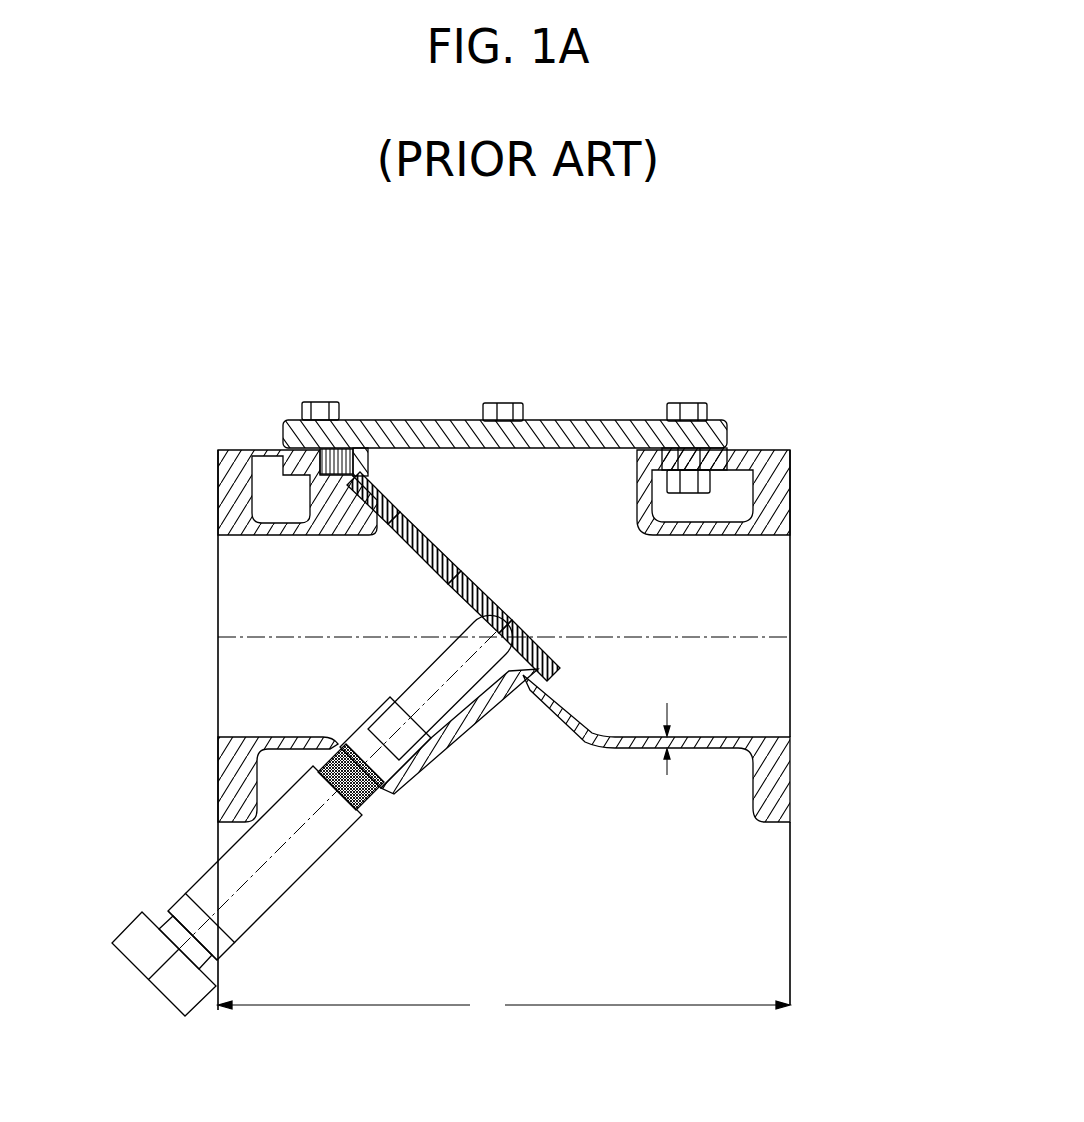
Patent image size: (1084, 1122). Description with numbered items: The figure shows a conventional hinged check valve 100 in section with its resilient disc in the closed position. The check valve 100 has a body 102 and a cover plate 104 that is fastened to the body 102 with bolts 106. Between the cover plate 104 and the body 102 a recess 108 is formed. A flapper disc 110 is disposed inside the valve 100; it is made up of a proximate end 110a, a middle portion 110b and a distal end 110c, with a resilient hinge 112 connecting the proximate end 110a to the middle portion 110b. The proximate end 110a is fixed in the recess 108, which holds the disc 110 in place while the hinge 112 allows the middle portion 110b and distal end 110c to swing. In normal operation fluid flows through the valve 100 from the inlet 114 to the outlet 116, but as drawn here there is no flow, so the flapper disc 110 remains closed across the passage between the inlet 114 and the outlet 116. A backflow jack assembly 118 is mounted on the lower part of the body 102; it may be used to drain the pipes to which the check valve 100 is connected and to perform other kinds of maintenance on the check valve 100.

The hinged check valve 100 is at (243, 348).
The body 102 is at (792, 488).
The cover plate 104 is at (432, 420).
The bolts 106 is at (690, 403).
The recess 108 is at (345, 421).
The flapper disc 110 is at (468, 568).
The proximate end 110a is at (323, 470).
The middle portion 110b is at (492, 592).
The distal end 110c is at (553, 640).
The resilient hinge 112 is at (365, 473).
The inlet 114 is at (218, 548).
The outlet 116 is at (792, 563).
The backflow jack assembly 118 is at (108, 928).